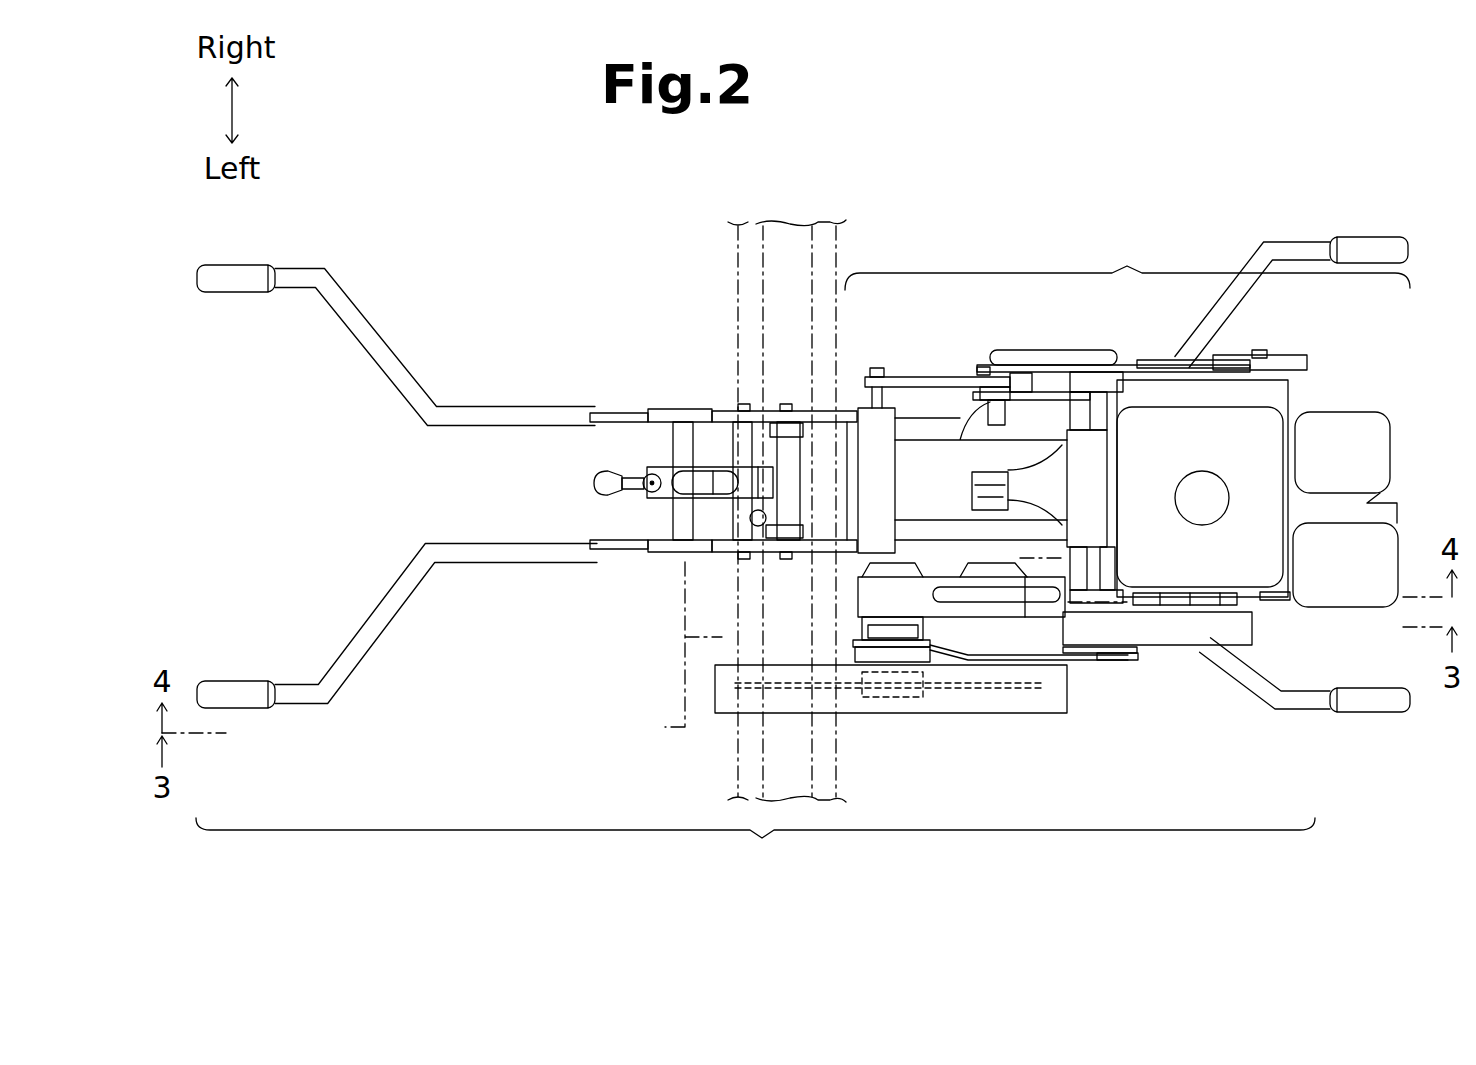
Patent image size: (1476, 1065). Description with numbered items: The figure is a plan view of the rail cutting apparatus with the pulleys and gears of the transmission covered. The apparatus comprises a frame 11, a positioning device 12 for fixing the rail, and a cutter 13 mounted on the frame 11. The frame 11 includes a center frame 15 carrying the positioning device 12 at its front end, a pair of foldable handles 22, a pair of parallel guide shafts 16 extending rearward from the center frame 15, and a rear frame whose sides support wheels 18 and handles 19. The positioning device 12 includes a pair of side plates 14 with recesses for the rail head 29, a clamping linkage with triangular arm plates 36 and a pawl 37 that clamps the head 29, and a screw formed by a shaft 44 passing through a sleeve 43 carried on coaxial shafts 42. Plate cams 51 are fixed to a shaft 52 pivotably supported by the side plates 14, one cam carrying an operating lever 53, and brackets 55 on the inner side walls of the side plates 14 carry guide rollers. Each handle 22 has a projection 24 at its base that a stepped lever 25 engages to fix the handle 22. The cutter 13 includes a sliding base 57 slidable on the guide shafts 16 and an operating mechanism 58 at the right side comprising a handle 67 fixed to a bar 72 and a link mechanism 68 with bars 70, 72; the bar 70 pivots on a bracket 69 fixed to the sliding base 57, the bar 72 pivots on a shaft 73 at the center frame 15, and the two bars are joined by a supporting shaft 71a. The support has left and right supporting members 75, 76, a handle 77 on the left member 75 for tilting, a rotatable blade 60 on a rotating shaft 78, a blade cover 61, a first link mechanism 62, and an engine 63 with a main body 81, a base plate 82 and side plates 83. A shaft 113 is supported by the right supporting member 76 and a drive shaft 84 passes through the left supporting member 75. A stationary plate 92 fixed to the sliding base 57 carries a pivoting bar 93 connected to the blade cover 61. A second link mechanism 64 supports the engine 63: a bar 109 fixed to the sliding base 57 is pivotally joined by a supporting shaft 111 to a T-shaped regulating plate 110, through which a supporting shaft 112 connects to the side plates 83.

The frame 11 is at (755, 849).
The positioning device 12 is at (728, 398).
The cutter 13 is at (1127, 258).
The side plates 14 is at (856, 405).
The center frame 15 is at (880, 517).
The guide shafts 16 is at (908, 430).
The wheels 18 is at (1295, 355).
The handles 19 is at (1310, 235).
The foldable handles 22 is at (383, 340).
The projection 24 is at (604, 410).
The lever 25 is at (654, 410).
The rail head 29 is at (738, 757).
The arm plates 36 is at (737, 465).
The pawl 37 is at (758, 484).
The coaxial shafts 42 is at (680, 447).
The sleeve 43 is at (658, 500).
The shaft 44 is at (647, 490).
The plate cams 51 is at (773, 418).
The shaft 52 is at (790, 455).
The operating lever 53 is at (775, 533).
The brackets 55 is at (716, 413).
The sliding base 57 is at (1138, 400).
The operating mechanism 58 is at (1022, 406).
The rotatable blade 60 is at (845, 692).
The blade cover 61 is at (992, 720).
The first link mechanism 62 is at (1120, 672).
The engine 63 is at (1409, 426).
The second link mechanism 64 is at (1098, 528).
The handle 67 is at (1072, 352).
The link mechanism 68 is at (960, 358).
The bracket 69 is at (1030, 370).
The bar 70 is at (985, 415).
The supporting shaft 71a is at (985, 350).
The bar 72 is at (918, 380).
The shaft 73 is at (880, 380).
The left supporting member 75 is at (1252, 612).
The right supporting member 76 is at (1130, 365).
The handle 77 is at (990, 593).
The rotating shaft 78 is at (910, 672).
The main body 81 is at (1400, 465).
The base plate 82 is at (1297, 398).
The side plates 83 is at (1255, 355).
The drive shaft 84 is at (1218, 590).
The stationary plate 92 is at (1138, 665).
The bar 93 is at (1077, 657).
The bar 109 is at (972, 495).
The regulating plate 110 is at (1112, 493).
The supporting shaft 111 is at (1013, 500).
The supporting shaft 112 is at (1132, 393).
The shaft 113 is at (1217, 377).